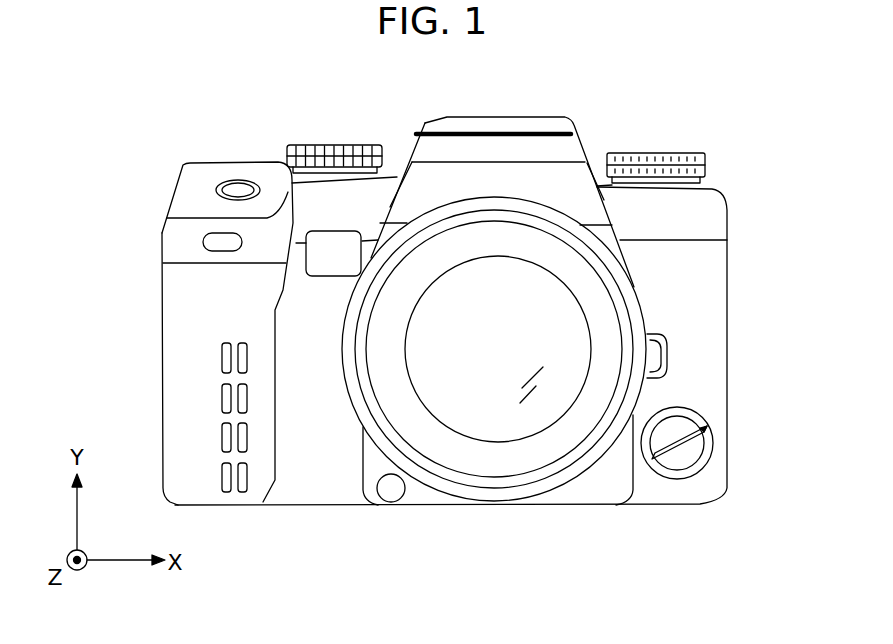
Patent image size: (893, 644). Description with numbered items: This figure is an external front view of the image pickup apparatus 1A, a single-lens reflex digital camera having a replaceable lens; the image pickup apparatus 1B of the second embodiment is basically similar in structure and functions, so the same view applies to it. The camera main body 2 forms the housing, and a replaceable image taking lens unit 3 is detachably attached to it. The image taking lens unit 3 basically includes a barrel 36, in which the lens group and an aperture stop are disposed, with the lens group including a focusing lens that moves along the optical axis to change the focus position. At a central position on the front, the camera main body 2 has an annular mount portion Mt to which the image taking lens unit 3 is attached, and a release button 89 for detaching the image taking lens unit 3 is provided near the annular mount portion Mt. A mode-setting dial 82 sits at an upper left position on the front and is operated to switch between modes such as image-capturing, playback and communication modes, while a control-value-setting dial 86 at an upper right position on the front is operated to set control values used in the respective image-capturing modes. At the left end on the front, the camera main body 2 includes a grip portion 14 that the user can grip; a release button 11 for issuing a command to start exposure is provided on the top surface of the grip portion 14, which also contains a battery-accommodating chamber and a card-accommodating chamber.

The image pickup apparatus 1A is at (134, 88).
The image pickup apparatus 1B is at (168, 88).
The camera main body 2 is at (727, 305).
The image taking lens unit 3 is at (555, 455).
The release button 11 is at (238, 186).
The grip portion 14 is at (170, 367).
The barrel 36 is at (643, 281).
The mode-setting dial 82 is at (338, 145).
The control-value-setting dial 86 is at (656, 153).
The release button 89 is at (668, 357).
The annular mount portion Mt is at (352, 417).